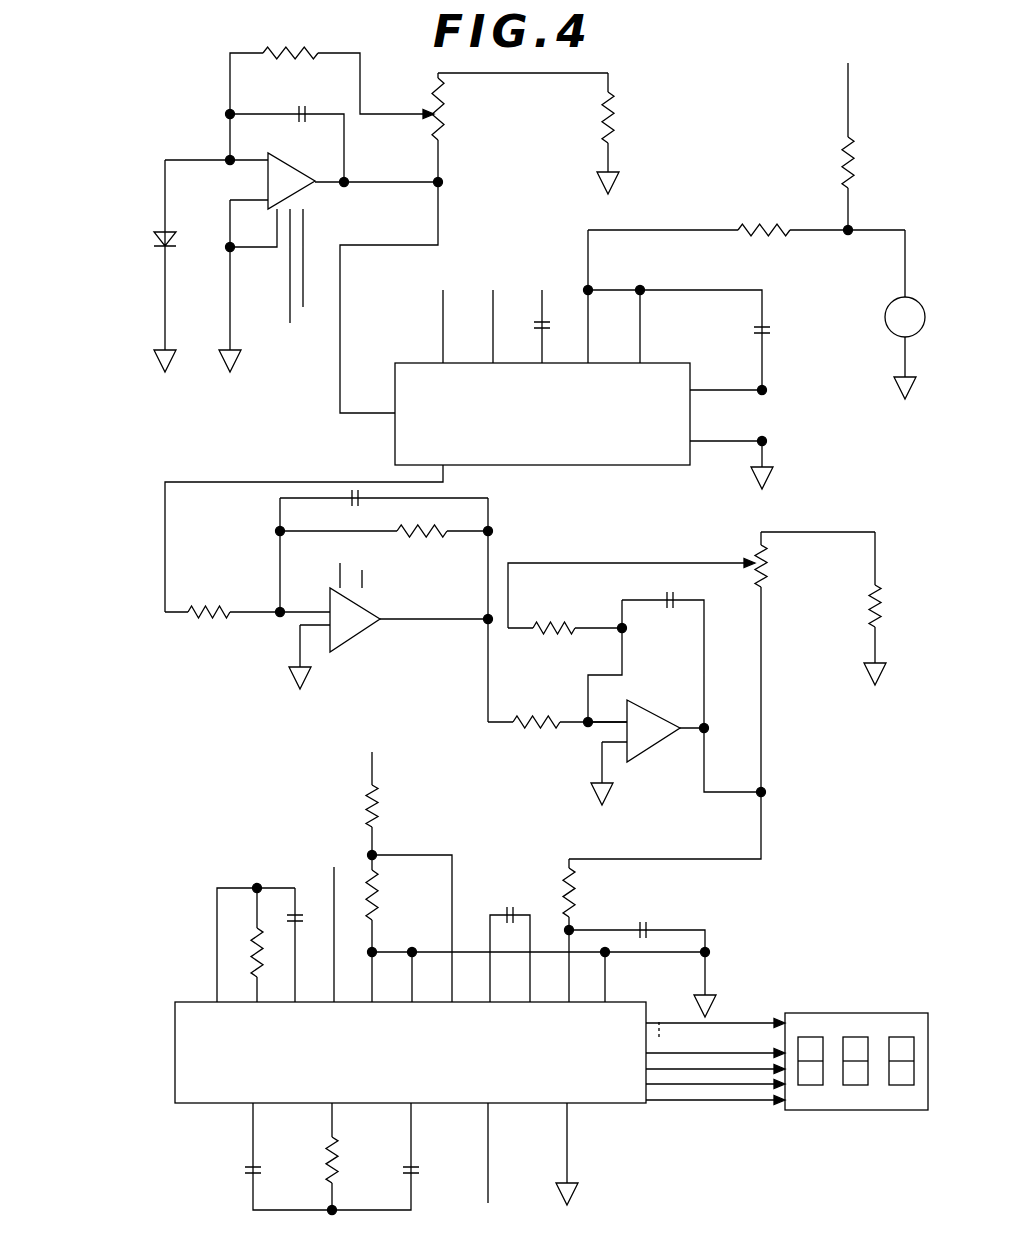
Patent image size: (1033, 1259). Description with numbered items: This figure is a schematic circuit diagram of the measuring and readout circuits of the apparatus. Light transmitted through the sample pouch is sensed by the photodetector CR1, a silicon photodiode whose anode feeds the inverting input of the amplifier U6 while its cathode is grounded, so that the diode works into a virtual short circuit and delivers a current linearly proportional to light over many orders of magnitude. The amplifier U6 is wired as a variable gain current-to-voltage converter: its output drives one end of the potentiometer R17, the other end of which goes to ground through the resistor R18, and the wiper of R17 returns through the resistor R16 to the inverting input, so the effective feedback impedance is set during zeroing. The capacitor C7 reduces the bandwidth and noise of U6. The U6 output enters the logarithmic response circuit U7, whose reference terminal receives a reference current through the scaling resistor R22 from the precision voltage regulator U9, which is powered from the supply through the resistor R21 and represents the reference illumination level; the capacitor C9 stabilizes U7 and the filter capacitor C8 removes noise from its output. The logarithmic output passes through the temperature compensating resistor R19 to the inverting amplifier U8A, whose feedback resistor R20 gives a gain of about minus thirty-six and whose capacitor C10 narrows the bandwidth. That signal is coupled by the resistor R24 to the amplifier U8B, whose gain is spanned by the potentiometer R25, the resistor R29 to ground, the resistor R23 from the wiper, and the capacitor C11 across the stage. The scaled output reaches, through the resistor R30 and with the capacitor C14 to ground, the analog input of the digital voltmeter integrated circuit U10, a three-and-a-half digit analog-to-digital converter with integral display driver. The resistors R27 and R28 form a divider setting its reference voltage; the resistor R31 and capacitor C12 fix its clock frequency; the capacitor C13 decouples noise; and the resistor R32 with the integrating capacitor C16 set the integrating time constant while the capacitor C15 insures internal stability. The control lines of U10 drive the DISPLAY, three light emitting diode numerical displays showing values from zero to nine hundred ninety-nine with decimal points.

The resistor R16 is at (332, 95).
The capacitor C7 is at (287, 137).
The amplifier U6 is at (304, 258).
The photodetector CR1 is at (180, 266).
The potentiometer R17 is at (474, 243).
The resistor R18 is at (621, 133).
The logarithmic response circuit U7 is at (469, 421).
The filter capacitor C8 is at (552, 322).
The capacitor C9 is at (689, 340).
The scaling resistor R22 is at (746, 222).
The resistor R21 is at (856, 137).
The precision voltage regulator U9 is at (905, 314).
The capacitor C10 is at (384, 606).
The feedback resistor R20 is at (384, 540).
The temperature compensating resistor R19 is at (247, 603).
The amplifier U8A is at (391, 616).
The resistor R24 is at (557, 714).
The resistor R23 is at (631, 597).
The capacitor C11 is at (677, 694).
The amplifier U8B is at (646, 752).
The potentiometer R25 is at (722, 695).
The resistor R29 is at (888, 608).
The resistor R27 is at (379, 802).
The resistor R28 is at (541, 936).
The resistor R31 is at (256, 943).
The capacitor C12 is at (308, 945).
The capacitor C13 is at (510, 945).
The resistor R30 is at (584, 930).
The capacitor C14 is at (637, 928).
The integrated circuit U10 is at (480, 1036).
The capacitor C15 is at (234, 1173).
The resistor R32 is at (348, 1176).
The integrating capacitor C16 is at (426, 1173).
The digital display DISPLAY is at (856, 1076).